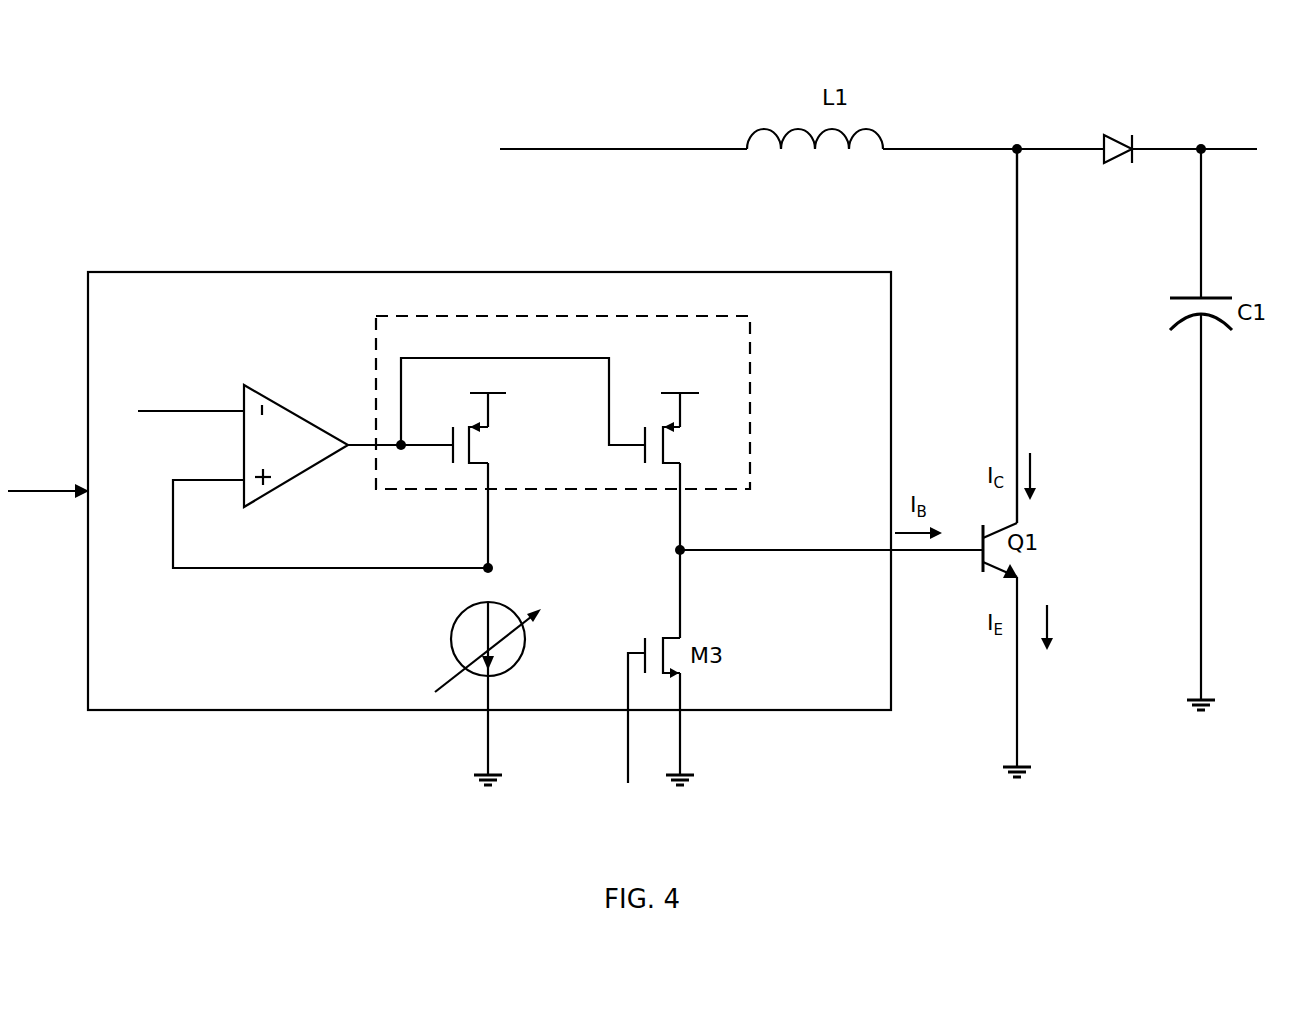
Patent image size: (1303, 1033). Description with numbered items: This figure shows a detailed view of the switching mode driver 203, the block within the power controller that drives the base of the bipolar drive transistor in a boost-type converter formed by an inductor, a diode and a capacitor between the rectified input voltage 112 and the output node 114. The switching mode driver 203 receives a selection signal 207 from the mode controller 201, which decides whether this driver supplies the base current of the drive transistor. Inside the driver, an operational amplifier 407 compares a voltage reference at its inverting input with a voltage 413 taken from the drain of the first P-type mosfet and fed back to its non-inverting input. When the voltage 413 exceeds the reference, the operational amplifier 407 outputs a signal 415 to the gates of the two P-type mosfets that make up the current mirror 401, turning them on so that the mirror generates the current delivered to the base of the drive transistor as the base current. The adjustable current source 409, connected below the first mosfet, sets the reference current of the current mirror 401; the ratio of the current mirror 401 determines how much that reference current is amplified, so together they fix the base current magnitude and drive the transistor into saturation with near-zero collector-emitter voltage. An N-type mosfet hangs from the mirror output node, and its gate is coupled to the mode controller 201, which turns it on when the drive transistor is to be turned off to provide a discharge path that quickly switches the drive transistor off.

The rectified input voltage 112 is at (590, 149).
The output line 114 is at (1247, 149).
The switching mode driver 203 is at (489, 491).
The selection signal 207 is at (22, 491).
The operational amplifier 407 is at (243, 439).
The signal 415 is at (362, 447).
The voltage 413 is at (267, 568).
The current mirror 401 is at (715, 317).
The adjustable current source 409 is at (470, 669).
The mode controller 201 is at (630, 759).